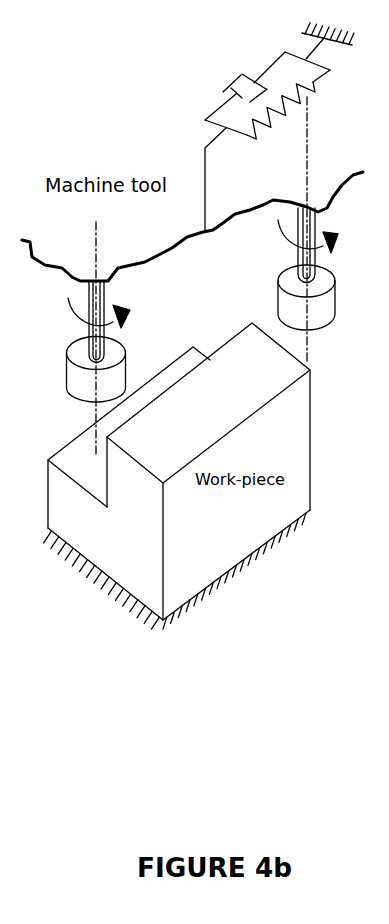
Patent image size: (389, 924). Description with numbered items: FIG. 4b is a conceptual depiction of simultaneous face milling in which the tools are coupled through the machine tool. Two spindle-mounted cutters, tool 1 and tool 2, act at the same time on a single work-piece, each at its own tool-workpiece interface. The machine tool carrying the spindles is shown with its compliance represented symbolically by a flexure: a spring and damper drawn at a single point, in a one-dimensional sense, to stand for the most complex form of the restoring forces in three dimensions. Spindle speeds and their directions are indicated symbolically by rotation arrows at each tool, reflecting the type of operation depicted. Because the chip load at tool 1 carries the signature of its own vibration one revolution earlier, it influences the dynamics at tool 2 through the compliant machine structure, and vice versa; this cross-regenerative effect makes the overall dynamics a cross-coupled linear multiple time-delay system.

The tool 1 is at (66, 338).
The tool 2 is at (273, 230).